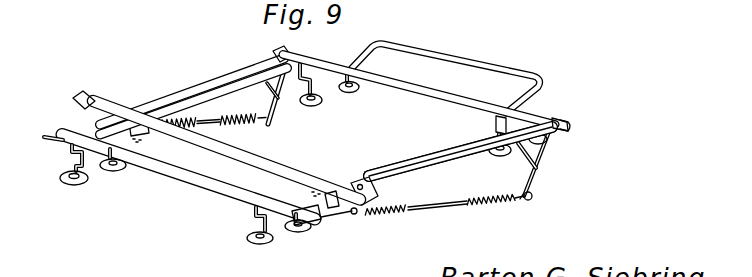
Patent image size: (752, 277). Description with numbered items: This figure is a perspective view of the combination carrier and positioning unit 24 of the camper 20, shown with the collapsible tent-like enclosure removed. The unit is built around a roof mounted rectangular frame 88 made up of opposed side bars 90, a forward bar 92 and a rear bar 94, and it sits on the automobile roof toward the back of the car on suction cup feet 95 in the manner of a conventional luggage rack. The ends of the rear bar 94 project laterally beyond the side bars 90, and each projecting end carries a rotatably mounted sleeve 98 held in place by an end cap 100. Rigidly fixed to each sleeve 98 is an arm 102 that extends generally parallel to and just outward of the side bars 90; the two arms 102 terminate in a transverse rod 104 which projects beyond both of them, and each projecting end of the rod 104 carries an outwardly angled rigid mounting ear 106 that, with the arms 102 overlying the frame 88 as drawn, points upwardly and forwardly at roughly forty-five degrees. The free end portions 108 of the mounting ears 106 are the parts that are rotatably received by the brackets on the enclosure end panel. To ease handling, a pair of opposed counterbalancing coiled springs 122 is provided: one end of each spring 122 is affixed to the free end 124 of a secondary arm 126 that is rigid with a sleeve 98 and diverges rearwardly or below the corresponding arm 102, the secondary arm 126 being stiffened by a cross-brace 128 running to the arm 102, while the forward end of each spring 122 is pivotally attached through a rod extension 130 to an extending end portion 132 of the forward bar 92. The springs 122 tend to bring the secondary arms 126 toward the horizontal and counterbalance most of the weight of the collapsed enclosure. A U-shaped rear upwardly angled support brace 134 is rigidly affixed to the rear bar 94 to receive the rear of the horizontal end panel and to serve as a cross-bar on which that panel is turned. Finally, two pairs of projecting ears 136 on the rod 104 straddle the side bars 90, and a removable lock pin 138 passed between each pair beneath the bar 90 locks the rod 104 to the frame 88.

The camper 20 is at (170, 3).
The combination carrier and positioning unit 24 is at (202, 78).
The roof mounted rectangular frame 88 is at (179, 182).
The side bars 90 is at (160, 112).
The forward bar 92 is at (206, 187).
The rear bar 94 is at (408, 84).
The suction cup feet 95 is at (66, 183).
The sleeve 98 is at (553, 121).
The end cap 100 is at (568, 128).
The arms 102 is at (452, 159).
The transverse bar or rod 104 is at (223, 149).
The mounting ear 106 is at (366, 184).
The free end portions 108 is at (358, 182).
The counterbalancing coiled springs 122 is at (442, 201).
The free end of secondary arm 124 is at (533, 196).
The secondary arm 126 is at (547, 153).
The cross-brace 128 is at (522, 150).
The rod extension 130 is at (330, 222).
The extending end portion 132 is at (307, 222).
The rear upwardly angled support brace 134 is at (463, 60).
The projecting ears 136 is at (333, 194).
The removable lock pin 138 is at (343, 220).